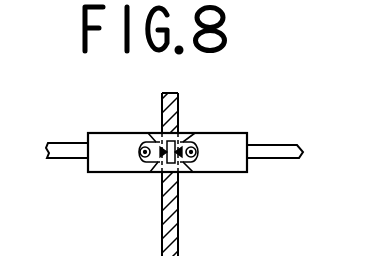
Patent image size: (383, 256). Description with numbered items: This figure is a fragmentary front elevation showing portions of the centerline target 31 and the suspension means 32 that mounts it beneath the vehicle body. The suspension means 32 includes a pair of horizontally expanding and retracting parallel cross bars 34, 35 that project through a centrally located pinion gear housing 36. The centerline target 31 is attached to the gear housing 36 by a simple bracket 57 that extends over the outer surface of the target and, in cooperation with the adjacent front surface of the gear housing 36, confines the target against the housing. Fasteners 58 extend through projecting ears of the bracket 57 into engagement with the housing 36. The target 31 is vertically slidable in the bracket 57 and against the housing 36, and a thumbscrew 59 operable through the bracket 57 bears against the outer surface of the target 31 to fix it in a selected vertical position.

The centerline target 31 is at (180, 207).
The suspension means 32 is at (245, 83).
The cross bar 34 is at (72, 159).
The cross bar 35 is at (273, 143).
The pinion gear housing 36 is at (199, 173).
The bracket 57 is at (152, 168).
The fasteners 58 is at (144, 146).
The thumbscrew 59 is at (176, 146).